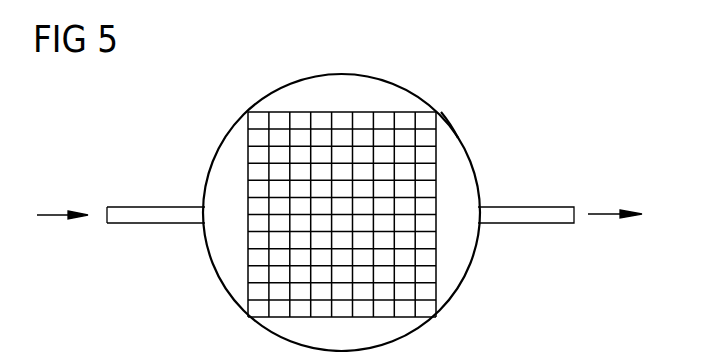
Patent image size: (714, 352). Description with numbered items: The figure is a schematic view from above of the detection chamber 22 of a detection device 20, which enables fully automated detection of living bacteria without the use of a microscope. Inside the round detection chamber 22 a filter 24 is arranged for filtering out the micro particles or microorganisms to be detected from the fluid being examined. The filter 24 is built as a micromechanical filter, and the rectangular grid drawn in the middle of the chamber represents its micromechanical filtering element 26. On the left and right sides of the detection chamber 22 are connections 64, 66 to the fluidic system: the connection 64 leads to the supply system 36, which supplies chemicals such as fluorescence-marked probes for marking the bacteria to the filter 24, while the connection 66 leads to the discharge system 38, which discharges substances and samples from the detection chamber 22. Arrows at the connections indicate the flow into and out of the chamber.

The detection device 20 is at (556, 103).
The detection chamber 22 is at (452, 298).
The filter 24 is at (449, 127).
The micromechanical filtering element 26 is at (278, 112).
The supply system 36 is at (53, 210).
The discharge system 38 is at (607, 212).
The connection to the supply system 64 is at (157, 205).
The connection to the discharge system 66 is at (531, 205).